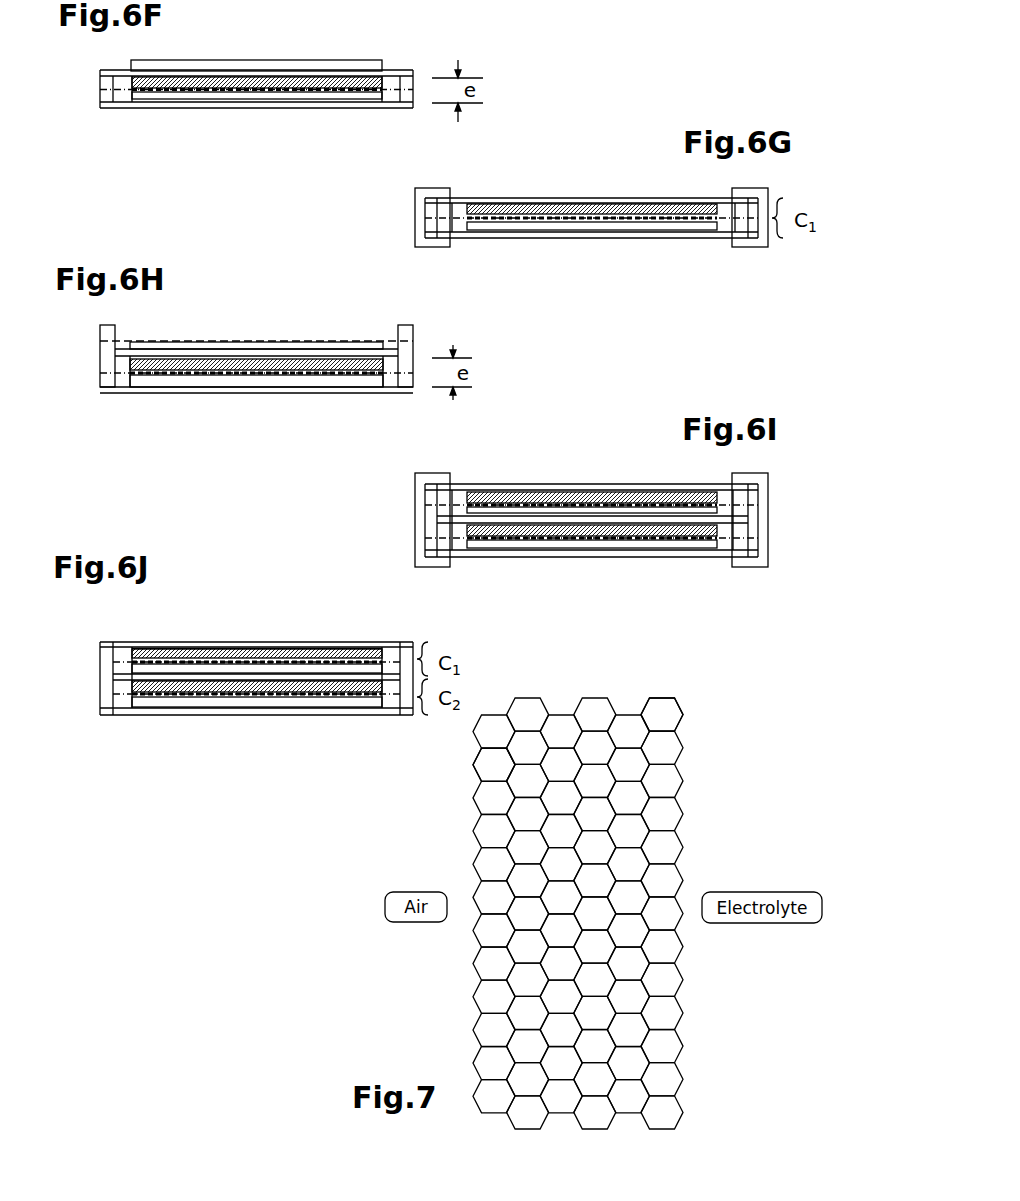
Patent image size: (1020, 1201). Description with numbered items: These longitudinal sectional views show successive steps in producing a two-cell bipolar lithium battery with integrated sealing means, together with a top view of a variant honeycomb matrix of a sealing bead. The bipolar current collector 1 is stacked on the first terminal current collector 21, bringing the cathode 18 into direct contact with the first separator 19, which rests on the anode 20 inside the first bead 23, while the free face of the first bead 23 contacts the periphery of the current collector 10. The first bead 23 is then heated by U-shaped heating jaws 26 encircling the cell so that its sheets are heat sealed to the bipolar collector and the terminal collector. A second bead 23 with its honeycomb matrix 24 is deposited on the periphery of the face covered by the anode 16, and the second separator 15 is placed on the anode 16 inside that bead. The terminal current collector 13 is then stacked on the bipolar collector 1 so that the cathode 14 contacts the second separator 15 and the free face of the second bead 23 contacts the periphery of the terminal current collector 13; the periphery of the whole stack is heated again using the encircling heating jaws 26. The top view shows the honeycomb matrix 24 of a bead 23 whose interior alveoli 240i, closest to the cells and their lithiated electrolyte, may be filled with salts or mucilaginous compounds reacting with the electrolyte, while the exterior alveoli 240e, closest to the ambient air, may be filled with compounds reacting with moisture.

In FIG. 6J, the bipolar current collector 1 is at (45, 642).
In FIG. 6F, the current collector 10 is at (213, 77).
In FIG. 6I, the current collector 10 is at (635, 517).
In FIG. 6J, the current collector 10 is at (100, 678).
In FIG. 6I, the terminal current collector 13 is at (595, 484).
In FIG. 6J, the terminal current collector 13 is at (287, 645).
In FIG. 6J, the cathode 14 is at (237, 655).
In FIG. 6H, the second separator 15 is at (325, 341).
In FIG. 6J, the second separator 15 is at (200, 653).
In FIG. 6F, the anode 16 is at (330, 61).
In FIG. 6G, the anode 16 is at (600, 198).
In FIG. 6H, the anode 16 is at (268, 345).
In FIG. 6I, the anode 16 is at (542, 507).
In FIG. 6J, the anode 16 is at (338, 670).
In FIG. 6F, the cathode 18 is at (253, 77).
In FIG. 6G, the cathode 18 is at (545, 203).
In FIG. 6H, the cathode 18 is at (210, 359).
In FIG. 6I, the cathode 18 is at (543, 536).
In FIG. 6J, the cathode 18 is at (253, 693).
In FIG. 6F, the first separator 19 is at (387, 92).
In FIG. 6G, the first separator 19 is at (650, 222).
In FIG. 6J, the first separator 19 is at (200, 695).
In FIG. 6F, the anode 20 is at (273, 99).
In FIG. 6H, the anode 20 is at (180, 387).
In FIG. 6J, the anode 20 is at (167, 707).
In FIG. 6F, the current collector 21 is at (185, 108).
In FIG. 6G, the current collector 21 is at (475, 238).
In FIG. 6H, the current collector 21 is at (237, 393).
In FIG. 6I, the current collector 21 is at (587, 557).
In FIG. 6J, the current collector 21 is at (303, 715).
In FIG. 6F, the bead 23 is at (107, 89).
In FIG. 6G, the bead 23 is at (440, 215).
In FIG. 6H, the bead 23 is at (100, 342).
In FIG. 6I, the bead 23 is at (440, 505).
In FIG. 6J, the bead 23 is at (105, 653).
In FIG. 7, the honeycomb matrix 24 is at (556, 678).
In FIG. 6G, the heating jaws 26 is at (420, 230).
In FIG. 6I, the heating jaws 26 is at (420, 518).
In FIG. 7, the exterior alveoli 240e is at (492, 765).
In FIG. 7, the interior alveoli 240i is at (665, 712).